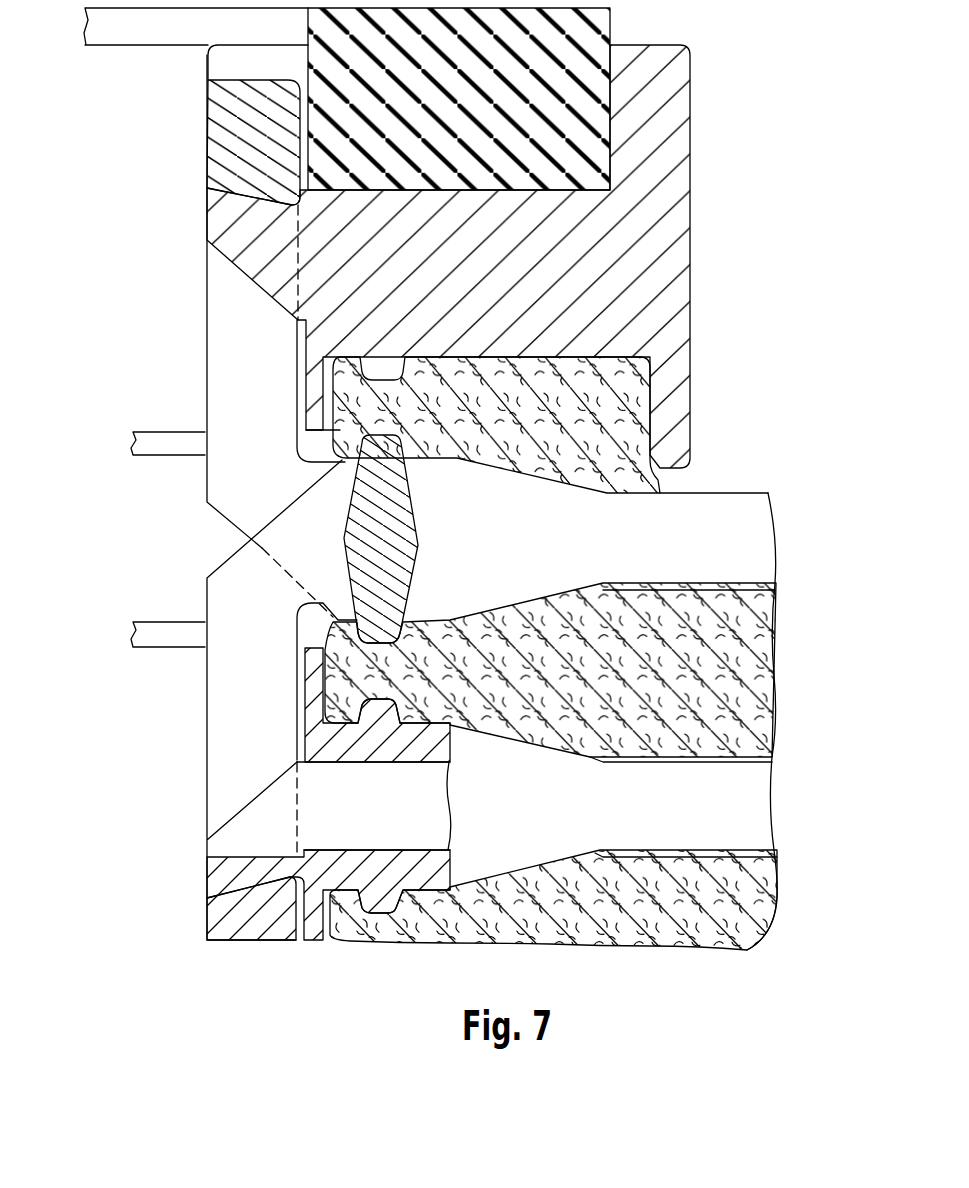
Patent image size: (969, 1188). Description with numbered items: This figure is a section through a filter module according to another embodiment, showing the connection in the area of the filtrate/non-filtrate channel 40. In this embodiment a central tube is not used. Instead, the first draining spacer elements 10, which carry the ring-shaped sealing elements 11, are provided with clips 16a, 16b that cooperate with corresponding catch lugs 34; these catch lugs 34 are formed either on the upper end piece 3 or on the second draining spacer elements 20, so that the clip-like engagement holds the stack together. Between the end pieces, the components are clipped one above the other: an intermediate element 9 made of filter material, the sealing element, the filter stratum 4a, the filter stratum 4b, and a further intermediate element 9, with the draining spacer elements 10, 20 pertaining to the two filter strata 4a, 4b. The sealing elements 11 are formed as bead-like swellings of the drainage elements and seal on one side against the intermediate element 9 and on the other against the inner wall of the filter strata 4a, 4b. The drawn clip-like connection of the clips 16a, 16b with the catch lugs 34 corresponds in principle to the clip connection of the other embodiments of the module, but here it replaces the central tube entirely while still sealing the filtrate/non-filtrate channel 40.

The upper end piece 3 is at (657, 128).
The catch lugs 34 is at (236, 222).
The clip 16a is at (236, 358).
The intermediate element 9 is at (612, 390).
The filtrate/non-filtrate channel 40 is at (122, 516).
The first draining spacer elements 10 is at (776, 538).
The ring-shaped sealing elements 11 is at (378, 562).
The filter stratum 4a is at (774, 679).
The second draining spacer elements 20 is at (736, 806).
The filter stratum 4b is at (758, 896).
The clip 16b is at (236, 742).